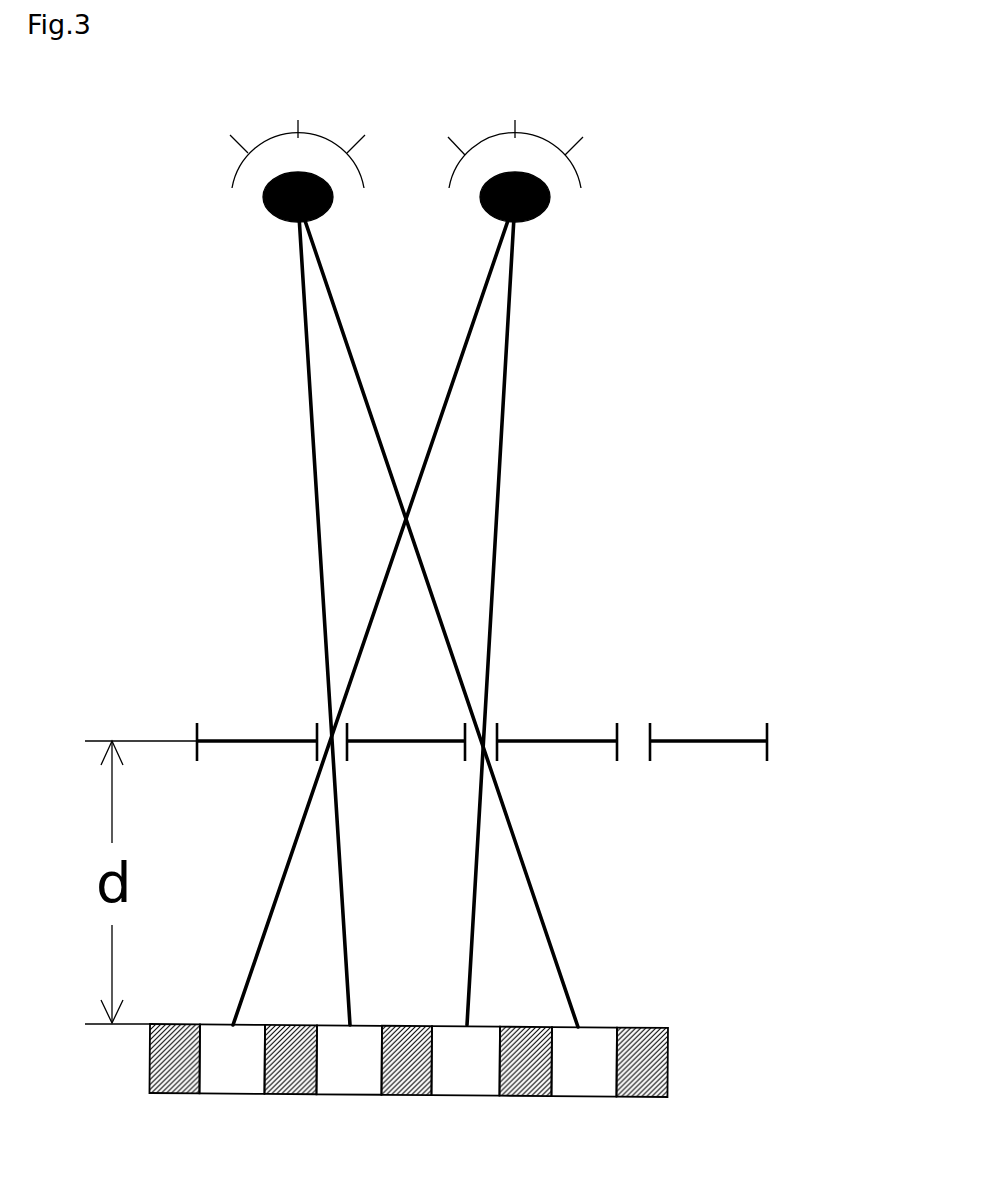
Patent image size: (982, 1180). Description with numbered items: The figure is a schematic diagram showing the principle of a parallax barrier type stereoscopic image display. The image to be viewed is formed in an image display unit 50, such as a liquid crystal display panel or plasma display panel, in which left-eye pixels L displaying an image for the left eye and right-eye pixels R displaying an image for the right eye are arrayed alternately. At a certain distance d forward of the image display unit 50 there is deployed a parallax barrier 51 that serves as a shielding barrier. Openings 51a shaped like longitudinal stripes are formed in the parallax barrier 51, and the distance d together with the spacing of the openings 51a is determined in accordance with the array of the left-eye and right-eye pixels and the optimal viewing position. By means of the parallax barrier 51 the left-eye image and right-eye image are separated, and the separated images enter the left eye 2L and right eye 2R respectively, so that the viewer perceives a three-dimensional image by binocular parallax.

The right eye 2R is at (268, 210).
The left eye 2L is at (545, 215).
The parallax barrier 51 is at (768, 742).
The openings 51a is at (328, 763).
The image display unit 50 is at (668, 1058).